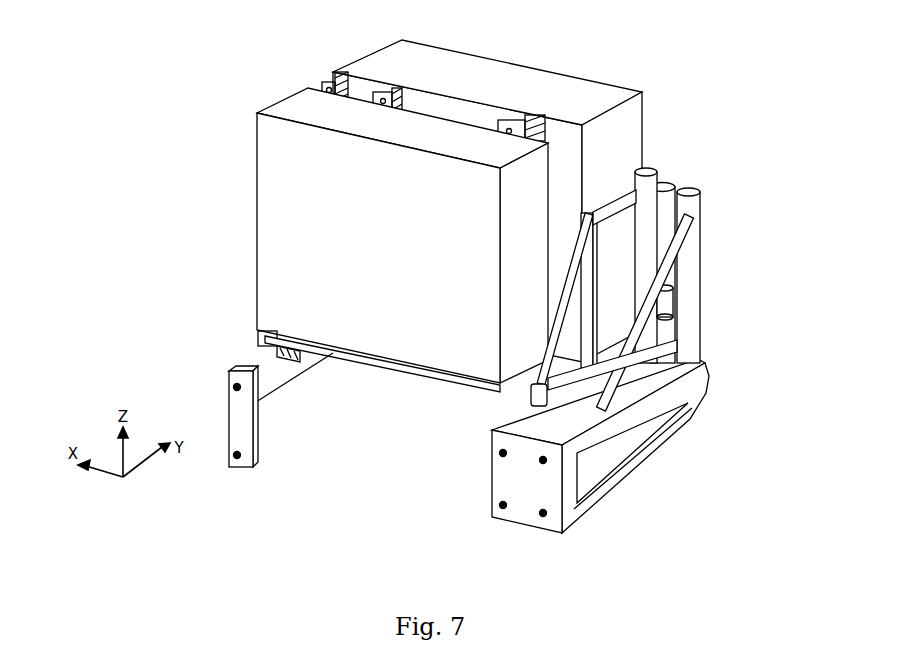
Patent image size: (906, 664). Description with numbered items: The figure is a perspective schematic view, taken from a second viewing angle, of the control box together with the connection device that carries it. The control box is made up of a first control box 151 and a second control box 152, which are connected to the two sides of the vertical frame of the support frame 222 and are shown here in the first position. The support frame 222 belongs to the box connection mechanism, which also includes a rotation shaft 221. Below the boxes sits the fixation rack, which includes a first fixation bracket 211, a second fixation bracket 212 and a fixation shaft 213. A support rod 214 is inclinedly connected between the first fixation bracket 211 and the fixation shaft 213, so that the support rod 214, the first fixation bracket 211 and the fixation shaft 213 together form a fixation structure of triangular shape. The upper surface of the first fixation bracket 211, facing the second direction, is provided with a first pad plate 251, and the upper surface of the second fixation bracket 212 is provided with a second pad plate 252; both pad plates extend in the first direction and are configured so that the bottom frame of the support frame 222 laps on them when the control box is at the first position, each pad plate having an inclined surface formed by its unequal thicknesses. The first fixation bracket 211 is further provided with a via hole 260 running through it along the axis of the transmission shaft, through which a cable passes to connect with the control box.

The first control box 151 is at (378, 62).
The second control box 152 is at (288, 108).
The first fixation bracket 211 is at (670, 433).
The second fixation bracket 212 is at (307, 375).
The fixation shaft 213 is at (692, 270).
The support rod 214 is at (622, 362).
The rotation shaft 221 is at (650, 170).
The support frame 222 is at (577, 233).
The first pad plate 251 is at (533, 403).
The second pad plate 252 is at (257, 347).
The via hole 260 is at (592, 463).